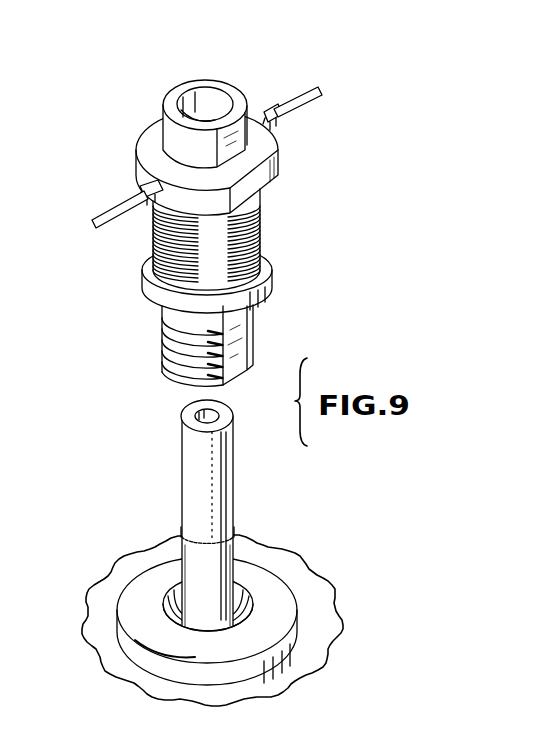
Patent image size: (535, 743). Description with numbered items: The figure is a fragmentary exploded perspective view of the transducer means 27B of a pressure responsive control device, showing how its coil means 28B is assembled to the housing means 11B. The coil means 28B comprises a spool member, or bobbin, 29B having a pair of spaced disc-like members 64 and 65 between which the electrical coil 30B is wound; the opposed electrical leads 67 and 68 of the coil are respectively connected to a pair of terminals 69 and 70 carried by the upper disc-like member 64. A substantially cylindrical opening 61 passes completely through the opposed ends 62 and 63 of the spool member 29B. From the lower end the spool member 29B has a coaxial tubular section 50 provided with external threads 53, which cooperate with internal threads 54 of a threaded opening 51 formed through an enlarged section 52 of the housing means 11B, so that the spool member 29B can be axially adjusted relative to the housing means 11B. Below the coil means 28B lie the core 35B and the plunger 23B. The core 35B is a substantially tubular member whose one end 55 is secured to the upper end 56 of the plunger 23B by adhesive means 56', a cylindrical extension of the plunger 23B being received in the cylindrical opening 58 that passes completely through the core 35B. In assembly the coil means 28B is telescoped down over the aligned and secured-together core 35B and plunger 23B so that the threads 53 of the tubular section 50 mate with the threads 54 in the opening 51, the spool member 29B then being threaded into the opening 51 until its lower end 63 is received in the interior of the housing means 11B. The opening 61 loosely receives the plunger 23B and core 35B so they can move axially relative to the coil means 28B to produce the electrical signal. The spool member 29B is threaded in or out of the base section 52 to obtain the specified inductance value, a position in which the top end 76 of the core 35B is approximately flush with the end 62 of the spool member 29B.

The housing means 11B is at (315, 578).
The plunger 23B is at (195, 570).
The transducer means 27B is at (195, 173).
The coil means 28B is at (150, 237).
The spool member 29B is at (183, 126).
The electrical coil 30B is at (260, 230).
The core 35B is at (191, 509).
The tubular section 50 is at (201, 353).
The threaded opening 51 is at (250, 588).
The enlarged section 52 is at (285, 608).
The external threads 53 is at (172, 337).
The internal threads 54 is at (211, 605).
The end 55 is at (220, 530).
The upper end 56 is at (251, 564).
The adhesive means 56' is at (164, 509).
The cylindrical opening 58 is at (197, 418).
The cylindrical opening 61 is at (219, 102).
The end 62 is at (172, 101).
The end 63 is at (178, 387).
The disc-like member 64 is at (267, 155).
The disc-like member 65 is at (272, 270).
The electrical lead 67 is at (150, 207).
The electrical lead 68 is at (272, 108).
The terminal 69 is at (112, 211).
The terminal 70 is at (302, 90).
The top end 76 is at (227, 412).